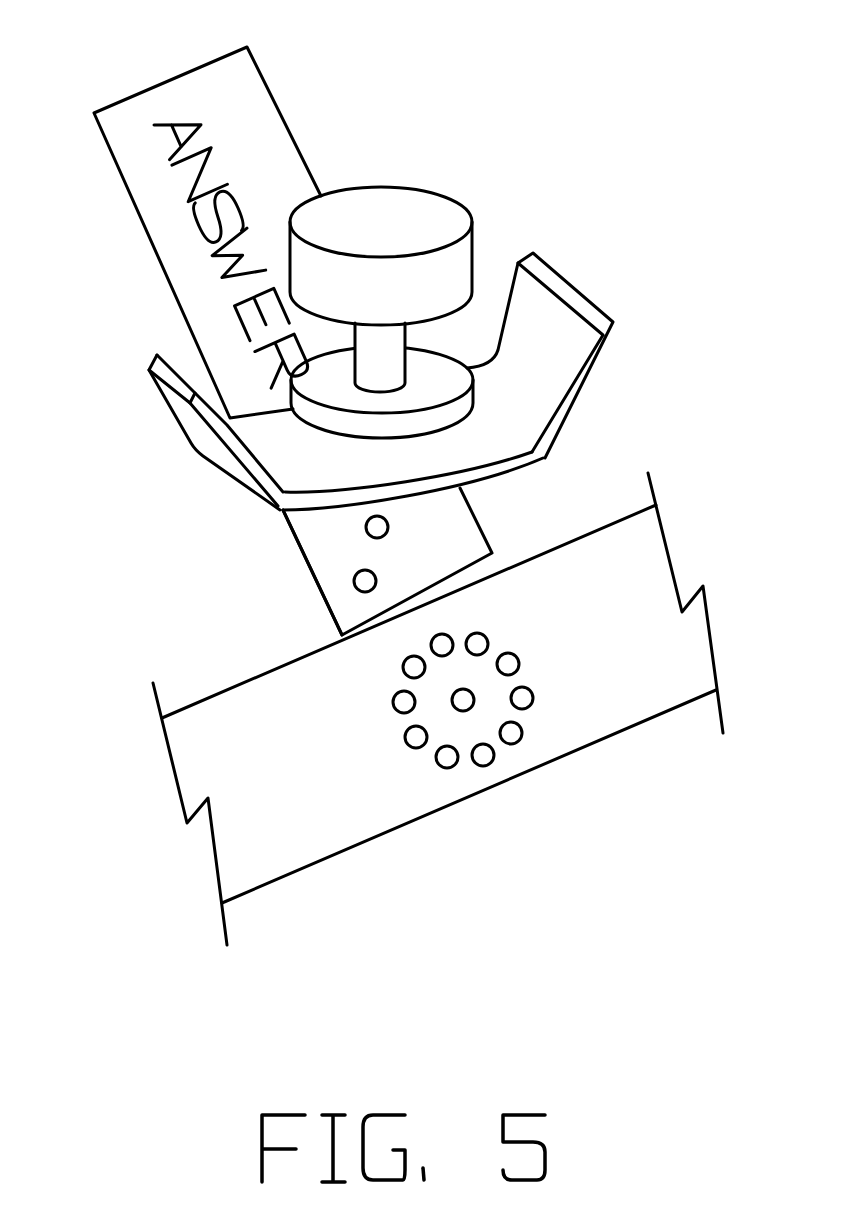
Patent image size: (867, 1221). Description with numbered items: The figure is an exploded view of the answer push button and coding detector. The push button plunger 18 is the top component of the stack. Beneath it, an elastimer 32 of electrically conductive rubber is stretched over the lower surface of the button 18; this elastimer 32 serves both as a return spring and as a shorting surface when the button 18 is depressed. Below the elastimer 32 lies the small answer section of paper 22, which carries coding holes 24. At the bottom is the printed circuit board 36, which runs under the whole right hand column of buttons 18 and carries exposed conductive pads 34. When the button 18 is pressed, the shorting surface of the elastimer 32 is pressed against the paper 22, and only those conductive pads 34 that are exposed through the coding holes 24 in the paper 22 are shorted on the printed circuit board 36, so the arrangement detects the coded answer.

The answer select push button 18 is at (567, 100).
The answer section of paper 22 is at (302, 558).
The coding holes 24 is at (683, 433).
The elastimer 32 is at (698, 338).
The conductive pads 34 is at (400, 886).
The printed circuit board 36 is at (688, 800).